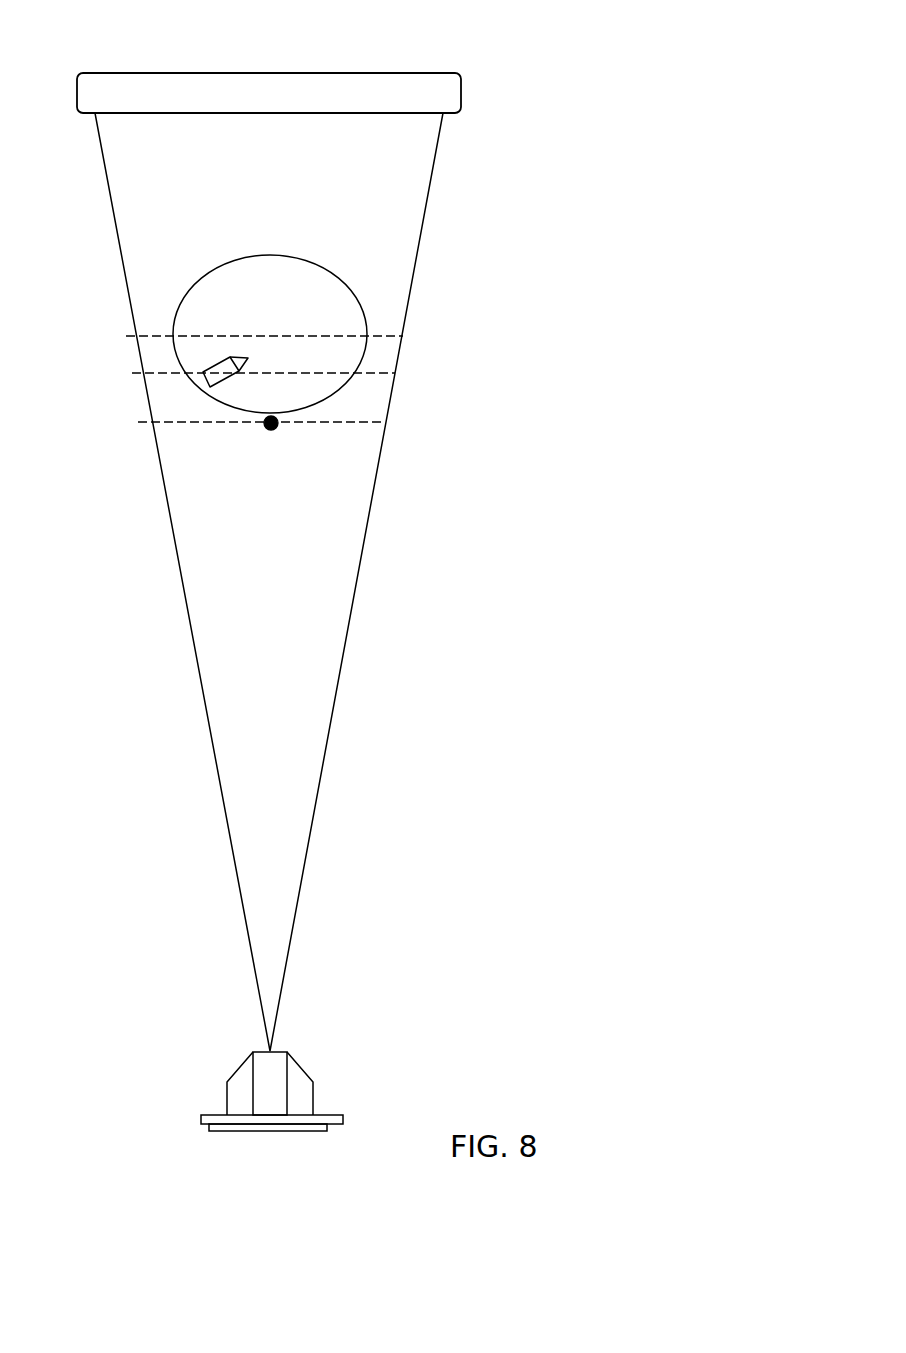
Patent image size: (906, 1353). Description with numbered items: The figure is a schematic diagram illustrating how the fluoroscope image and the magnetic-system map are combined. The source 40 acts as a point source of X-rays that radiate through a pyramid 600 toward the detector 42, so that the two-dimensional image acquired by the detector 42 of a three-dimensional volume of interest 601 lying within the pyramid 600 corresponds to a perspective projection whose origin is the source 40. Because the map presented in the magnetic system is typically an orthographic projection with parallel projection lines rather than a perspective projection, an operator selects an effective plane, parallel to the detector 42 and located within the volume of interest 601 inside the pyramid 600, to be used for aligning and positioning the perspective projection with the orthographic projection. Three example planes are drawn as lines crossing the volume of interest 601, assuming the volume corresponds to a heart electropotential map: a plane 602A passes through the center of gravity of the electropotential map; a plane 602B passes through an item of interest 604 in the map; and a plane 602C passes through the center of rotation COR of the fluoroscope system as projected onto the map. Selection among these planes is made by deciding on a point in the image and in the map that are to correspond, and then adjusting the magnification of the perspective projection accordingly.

The detector 42 is at (445, 73).
The pyramid 600 is at (312, 830).
The 3D volume of interest 601 is at (347, 284).
The plane through a center of gravity of the electropotential map 602A is at (126, 336).
The plane through an item of interest 602B is at (132, 373).
The plane through a center of rotation of the fluoroscope system 602C is at (138, 422).
The item of interest 604 is at (228, 387).
The center of rotation COR is at (278, 421).
The source 40 is at (260, 1132).